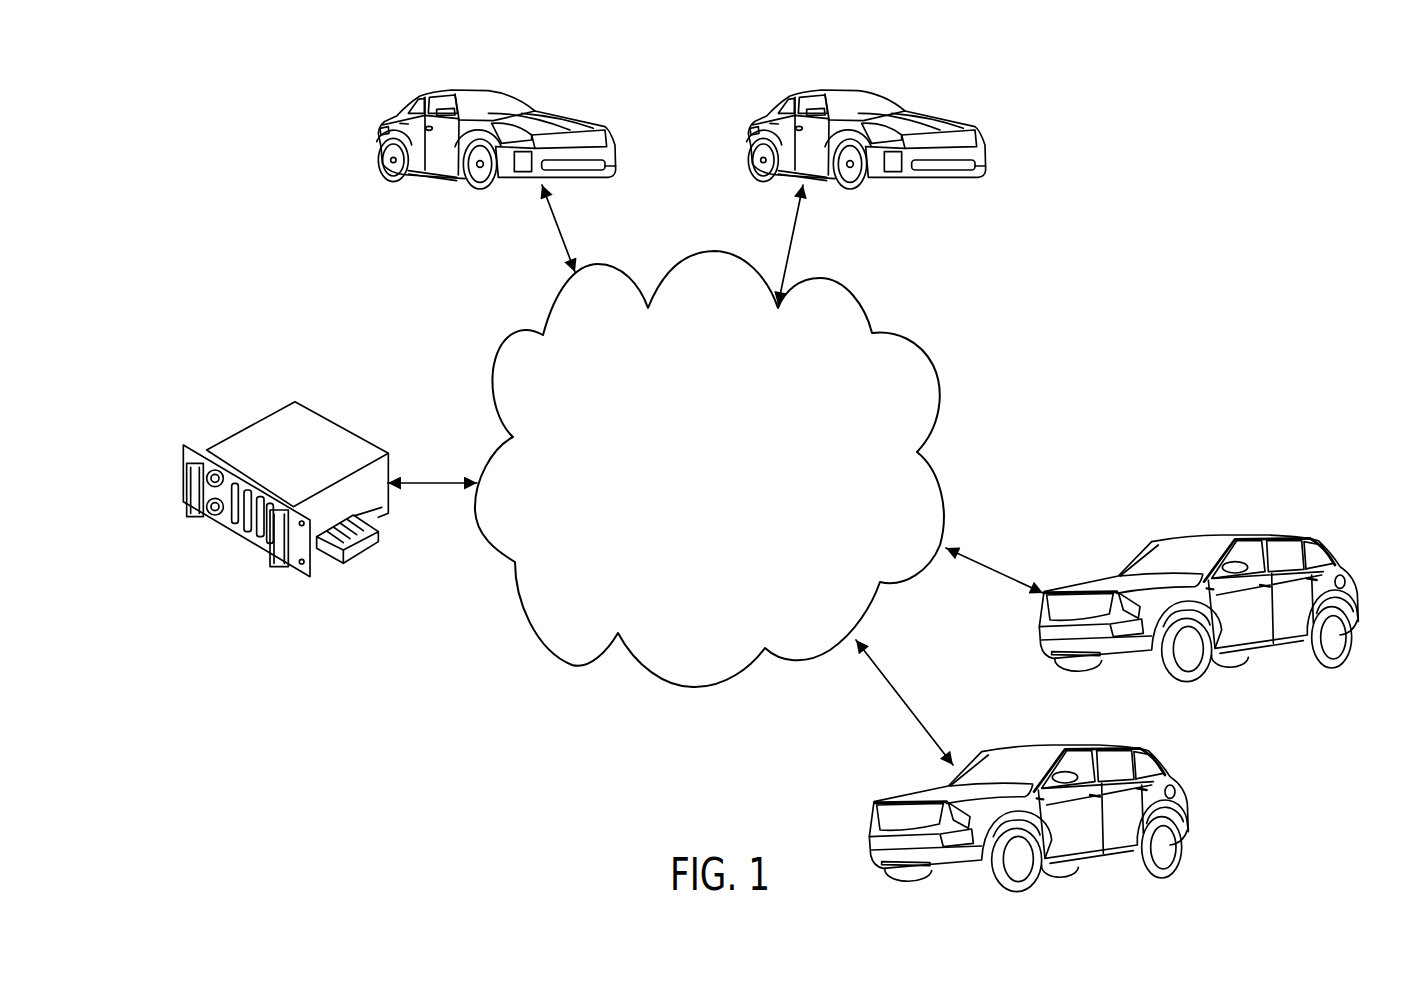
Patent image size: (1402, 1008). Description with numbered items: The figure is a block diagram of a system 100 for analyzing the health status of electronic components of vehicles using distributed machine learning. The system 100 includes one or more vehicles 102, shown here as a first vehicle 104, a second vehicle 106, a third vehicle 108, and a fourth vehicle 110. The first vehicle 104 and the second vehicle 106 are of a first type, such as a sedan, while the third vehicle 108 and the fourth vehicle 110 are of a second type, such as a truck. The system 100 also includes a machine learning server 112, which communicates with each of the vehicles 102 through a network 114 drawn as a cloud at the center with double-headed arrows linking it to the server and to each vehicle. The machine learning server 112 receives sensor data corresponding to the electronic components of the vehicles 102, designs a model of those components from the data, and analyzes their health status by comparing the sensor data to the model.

The system 100 is at (171, 105).
The vehicles 102 is at (382, 108).
The first vehicle 104 is at (468, 90).
The second vehicle 106 is at (835, 95).
The third vehicle 108 is at (1177, 532).
The fourth vehicle 110 is at (1007, 742).
The machine learning server 112 is at (270, 415).
The network 114 is at (923, 348).